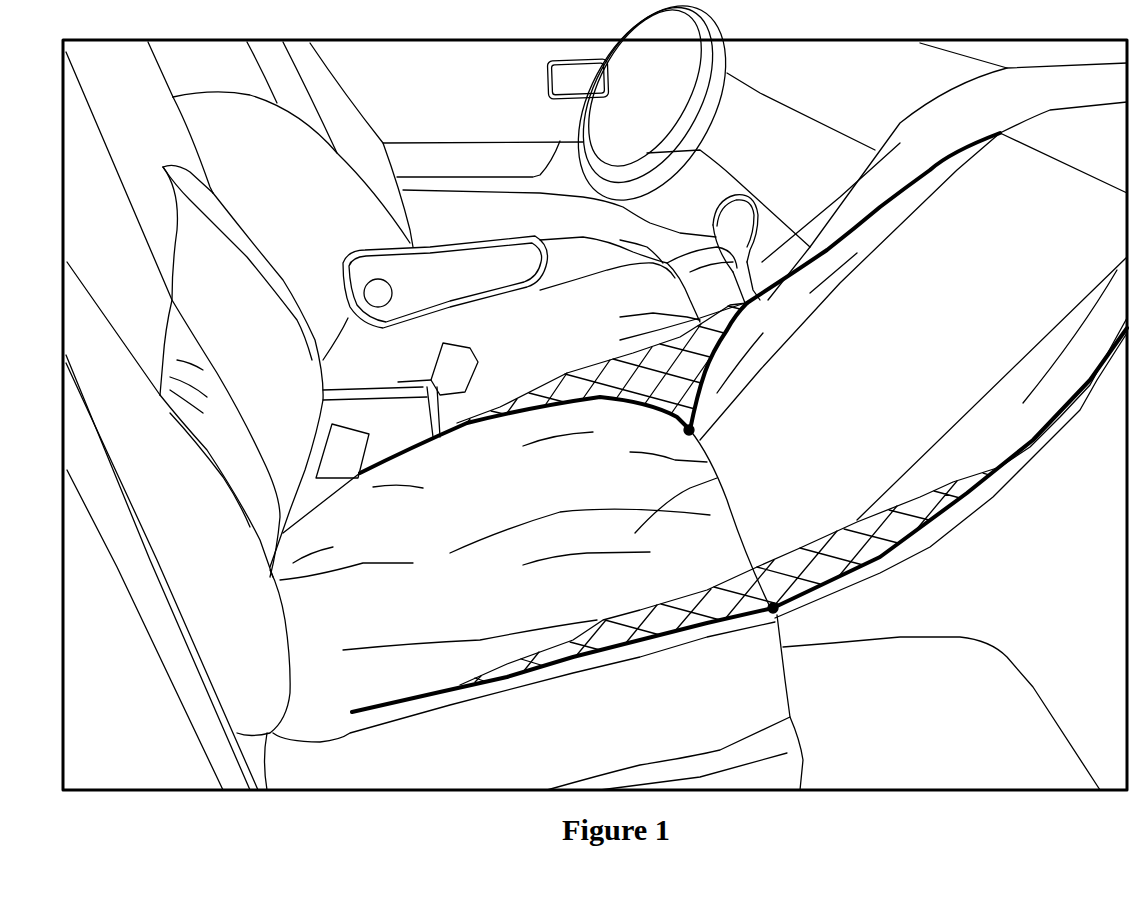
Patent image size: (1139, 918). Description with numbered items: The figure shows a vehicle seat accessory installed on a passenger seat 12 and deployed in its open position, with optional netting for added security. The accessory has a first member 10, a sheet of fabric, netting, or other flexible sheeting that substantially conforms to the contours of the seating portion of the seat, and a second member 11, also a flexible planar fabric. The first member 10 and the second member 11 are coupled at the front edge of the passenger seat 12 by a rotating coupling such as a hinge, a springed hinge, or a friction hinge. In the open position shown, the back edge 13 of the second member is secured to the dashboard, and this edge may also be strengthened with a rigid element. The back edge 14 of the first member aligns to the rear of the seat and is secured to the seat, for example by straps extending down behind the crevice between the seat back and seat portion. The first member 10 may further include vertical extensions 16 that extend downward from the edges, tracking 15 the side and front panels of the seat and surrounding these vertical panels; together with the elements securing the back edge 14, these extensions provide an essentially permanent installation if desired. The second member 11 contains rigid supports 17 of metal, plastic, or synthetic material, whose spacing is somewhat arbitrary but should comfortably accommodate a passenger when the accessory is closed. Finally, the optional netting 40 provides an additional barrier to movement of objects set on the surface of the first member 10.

The first member 10 is at (707, 482).
The second member 11 is at (837, 332).
The passenger seat 12 is at (737, 522).
The back edge of the second member 13 is at (1077, 163).
The back edge of the first member 14 is at (291, 629).
The edges of the seat 15 is at (563, 680).
The vertical extensions 16 is at (747, 710).
The rigid supports 17 is at (850, 277).
The netting 40 is at (823, 535).